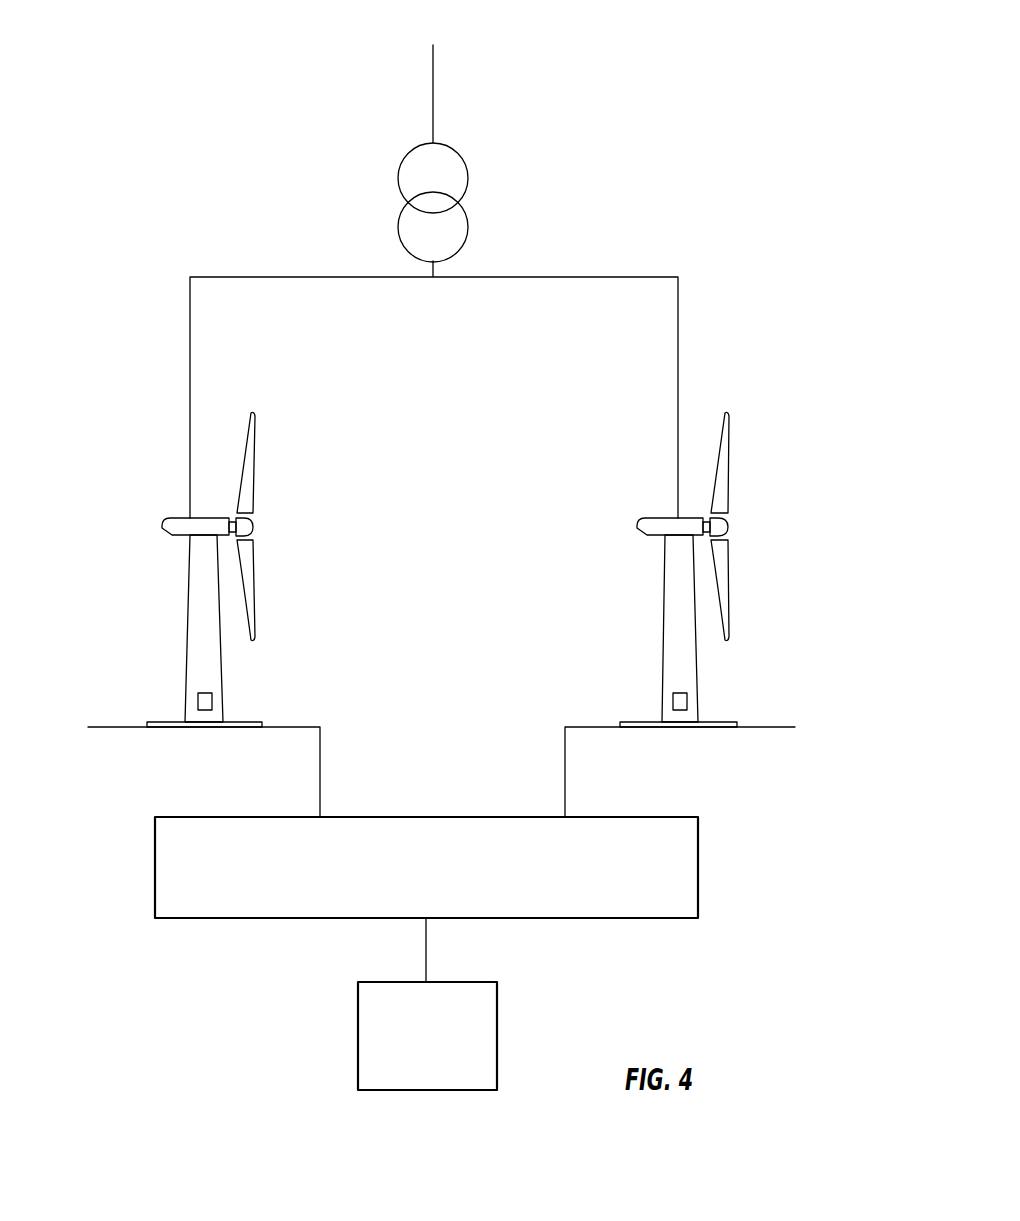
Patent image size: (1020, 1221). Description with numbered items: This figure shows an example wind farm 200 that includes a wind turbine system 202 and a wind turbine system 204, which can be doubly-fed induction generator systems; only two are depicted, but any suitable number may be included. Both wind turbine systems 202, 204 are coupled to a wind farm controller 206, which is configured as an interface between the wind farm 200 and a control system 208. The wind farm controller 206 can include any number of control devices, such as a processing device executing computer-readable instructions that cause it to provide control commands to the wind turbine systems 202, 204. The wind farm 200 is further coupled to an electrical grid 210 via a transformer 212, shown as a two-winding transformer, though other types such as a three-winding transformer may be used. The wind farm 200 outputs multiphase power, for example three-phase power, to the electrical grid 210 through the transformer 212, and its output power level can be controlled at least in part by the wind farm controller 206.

The wind farm 200 is at (740, 229).
The wind turbine system 202 is at (255, 463).
The wind turbine system 204 is at (729, 463).
The wind farm controller 206 is at (698, 872).
The control system 208 is at (497, 1048).
The electrical grid 210 is at (433, 56).
The transformer 212 is at (468, 181).